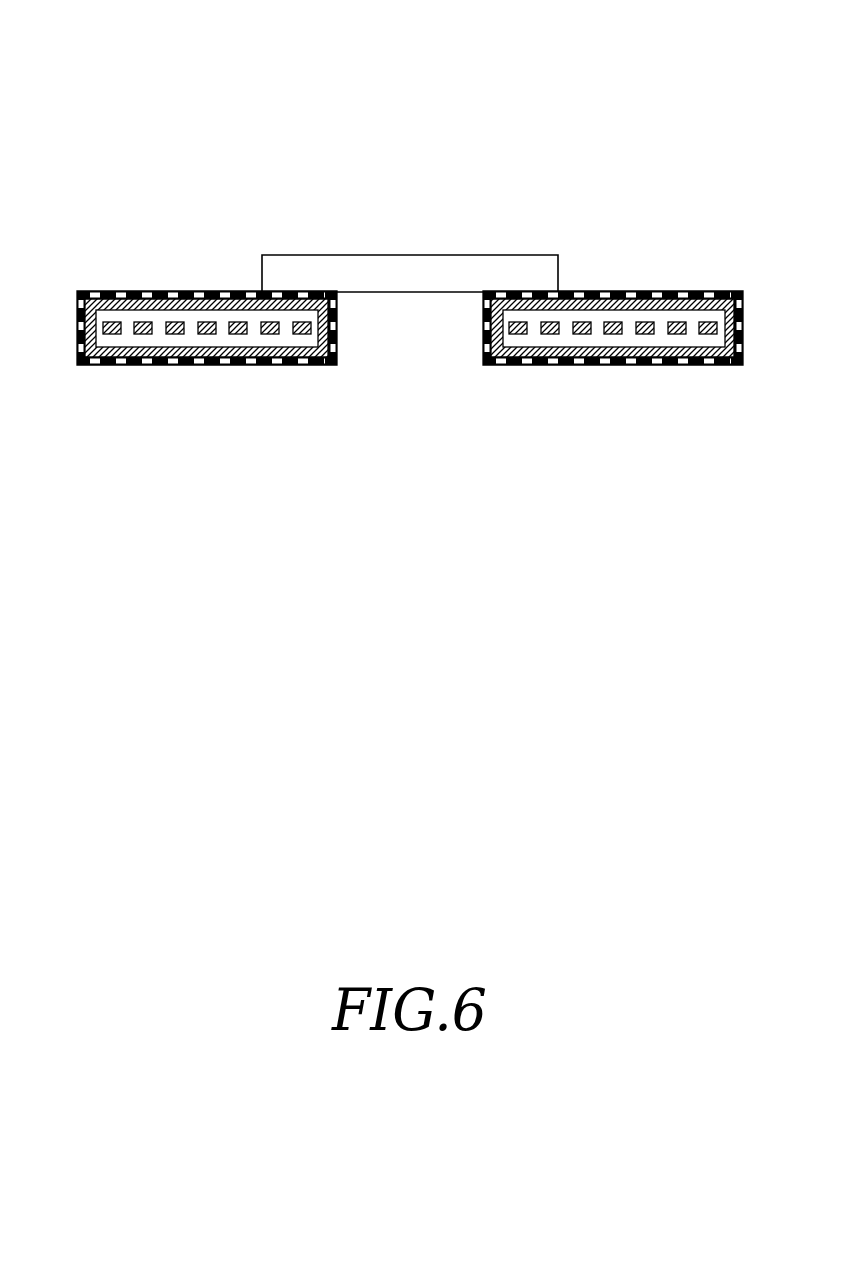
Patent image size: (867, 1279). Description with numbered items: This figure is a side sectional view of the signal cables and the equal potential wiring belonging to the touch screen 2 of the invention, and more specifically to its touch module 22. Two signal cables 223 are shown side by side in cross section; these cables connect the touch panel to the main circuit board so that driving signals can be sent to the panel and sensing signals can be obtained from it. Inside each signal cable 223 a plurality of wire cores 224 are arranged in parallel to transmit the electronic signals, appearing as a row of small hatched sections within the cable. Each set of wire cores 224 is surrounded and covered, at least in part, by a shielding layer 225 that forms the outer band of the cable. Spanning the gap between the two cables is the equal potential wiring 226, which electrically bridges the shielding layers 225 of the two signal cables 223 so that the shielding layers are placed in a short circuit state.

The touch screen 2 is at (293, 88).
The touch module 22 is at (658, 211).
The signal cable 223 is at (125, 297).
The wire core 224 is at (176, 335).
The shielding layer 225 is at (258, 350).
The equal potential wiring 226 is at (428, 268).